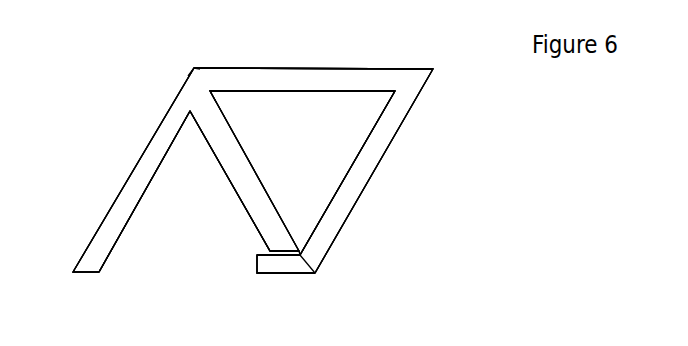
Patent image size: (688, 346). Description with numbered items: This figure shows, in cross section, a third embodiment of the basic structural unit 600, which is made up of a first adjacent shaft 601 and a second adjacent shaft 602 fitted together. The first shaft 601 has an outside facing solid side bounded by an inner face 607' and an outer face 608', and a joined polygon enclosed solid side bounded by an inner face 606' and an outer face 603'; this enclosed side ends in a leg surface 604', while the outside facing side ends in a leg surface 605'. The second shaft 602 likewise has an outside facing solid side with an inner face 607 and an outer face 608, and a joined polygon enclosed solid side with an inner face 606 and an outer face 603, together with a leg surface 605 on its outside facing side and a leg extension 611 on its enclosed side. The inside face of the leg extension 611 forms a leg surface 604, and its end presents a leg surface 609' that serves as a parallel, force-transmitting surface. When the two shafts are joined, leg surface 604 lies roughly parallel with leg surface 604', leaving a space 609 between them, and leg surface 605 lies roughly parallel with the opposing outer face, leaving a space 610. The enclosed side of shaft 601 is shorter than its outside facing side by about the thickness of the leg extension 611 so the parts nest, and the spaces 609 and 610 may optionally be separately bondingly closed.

The basic structural unit 600 is at (522, 165).
The first adjacent shaft 601 is at (147, 120).
The second adjacent shaft 602 is at (372, 58).
The outer face of a joined polygon enclosed solid side 603 is at (388, 171).
The outer face of a joined polygon enclosed solid side 603' is at (251, 171).
The leg surface 604 is at (317, 281).
The leg surface of a joined polygon enclosed solid side 604' is at (338, 227).
The leg surface of an outside facing solid side 605 is at (225, 59).
The leg surface of an outside facing solid side 605' is at (76, 302).
The inner face of a joined polygon enclosed solid side 606 is at (347, 173).
The inner face of a joined polygon enclosed solid side 606' is at (221, 181).
The inner face of an outside facing solid side 607 is at (302, 111).
The inner face of an outside facing solid side 607' is at (144, 191).
The outer face of an outside facing solid side 608 is at (313, 46).
The outer face of an outside facing solid side 608' is at (122, 170).
The space 609 is at (221, 296).
The leg surface of leg extension 609' is at (286, 307).
The space 610 is at (192, 67).
The leg extension of a joined polygon enclosed solid side 611 is at (266, 265).